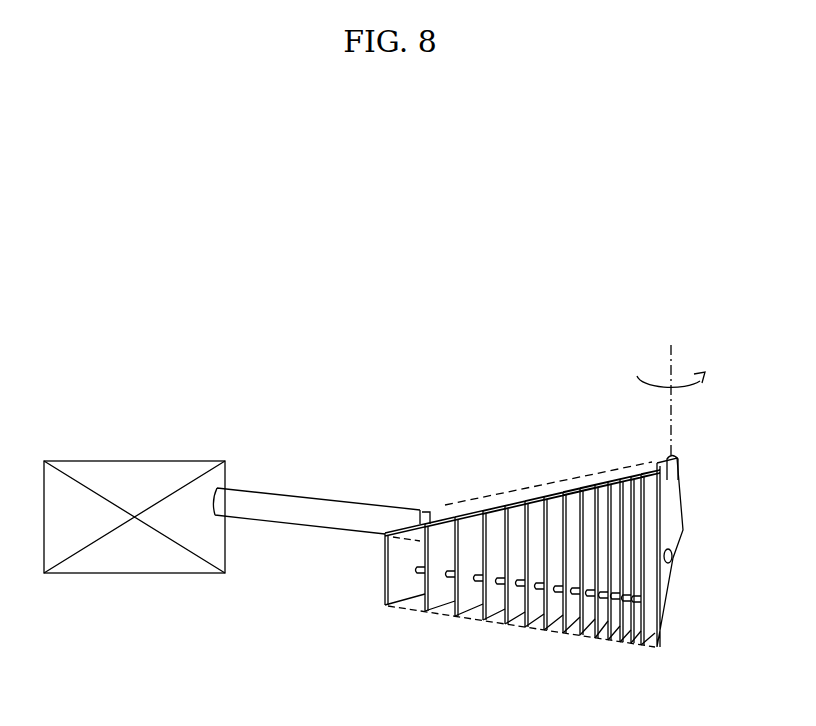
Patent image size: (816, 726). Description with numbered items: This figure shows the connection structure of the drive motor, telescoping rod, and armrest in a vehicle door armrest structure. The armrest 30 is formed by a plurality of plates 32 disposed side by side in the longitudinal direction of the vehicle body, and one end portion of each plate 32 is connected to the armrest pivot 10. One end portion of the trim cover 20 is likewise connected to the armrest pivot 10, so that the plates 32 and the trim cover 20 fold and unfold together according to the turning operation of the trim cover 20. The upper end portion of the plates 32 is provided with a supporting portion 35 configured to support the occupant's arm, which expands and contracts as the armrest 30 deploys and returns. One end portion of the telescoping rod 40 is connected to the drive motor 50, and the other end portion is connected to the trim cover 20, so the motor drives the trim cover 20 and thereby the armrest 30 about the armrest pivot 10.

The armrest pivot 10 is at (680, 465).
The trim cover 20 is at (667, 608).
The armrest 30 is at (522, 559).
The plate 32 is at (498, 604).
The supporting portion 35 is at (531, 490).
The telescoping rod 40 is at (274, 503).
The drive motor 50 is at (133, 475).